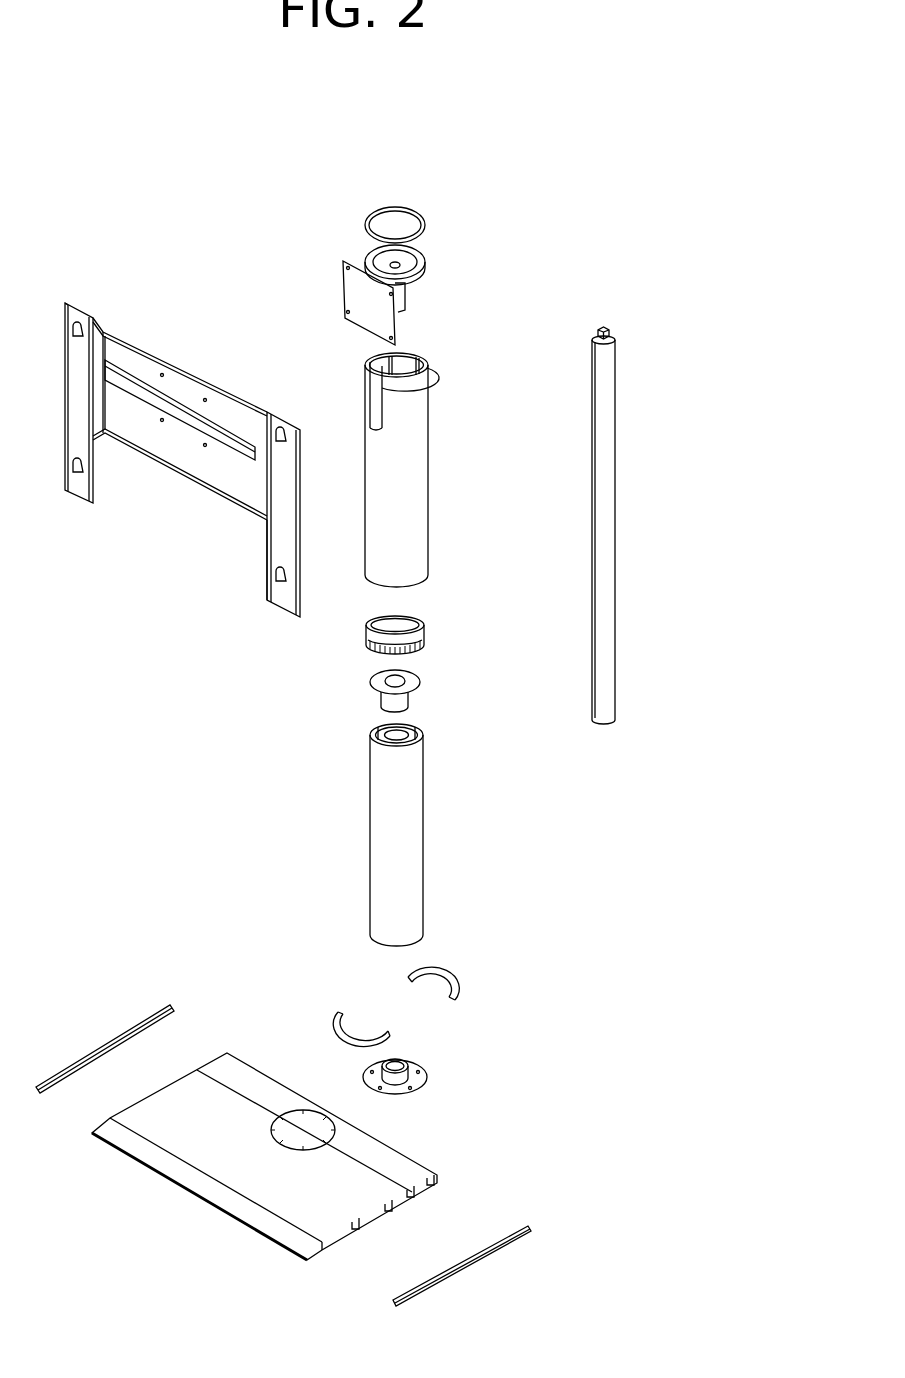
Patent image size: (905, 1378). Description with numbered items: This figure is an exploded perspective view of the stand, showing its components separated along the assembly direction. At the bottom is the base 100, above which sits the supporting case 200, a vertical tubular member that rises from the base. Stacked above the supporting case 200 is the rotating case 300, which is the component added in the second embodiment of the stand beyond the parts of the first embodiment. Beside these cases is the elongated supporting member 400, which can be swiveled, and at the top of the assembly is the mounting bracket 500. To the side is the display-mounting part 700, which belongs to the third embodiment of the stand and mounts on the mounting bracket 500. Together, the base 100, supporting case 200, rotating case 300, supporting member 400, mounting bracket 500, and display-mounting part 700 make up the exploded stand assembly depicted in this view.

The base 100 is at (164, 1217).
The supporting case 200 is at (298, 794).
The rotating case 300 is at (458, 431).
The supporting member 400 is at (636, 431).
The mounting bracket 500 is at (457, 252).
The display-mounting part 700 is at (180, 336).